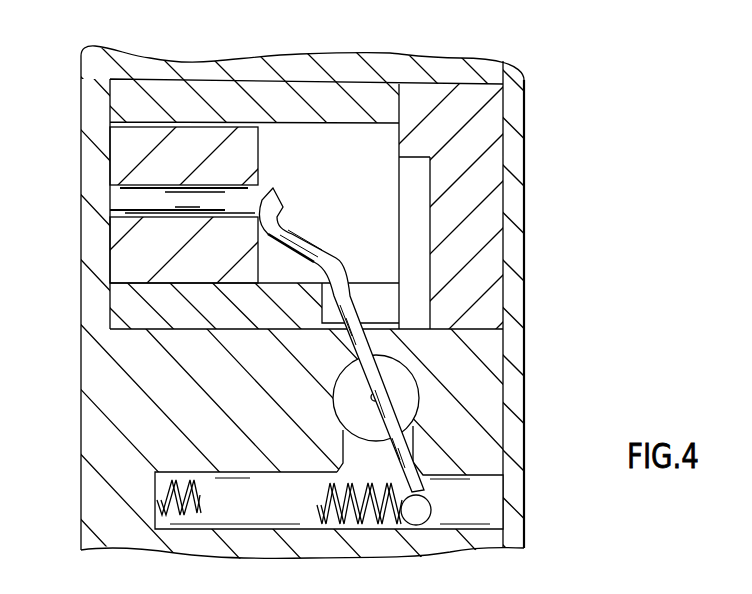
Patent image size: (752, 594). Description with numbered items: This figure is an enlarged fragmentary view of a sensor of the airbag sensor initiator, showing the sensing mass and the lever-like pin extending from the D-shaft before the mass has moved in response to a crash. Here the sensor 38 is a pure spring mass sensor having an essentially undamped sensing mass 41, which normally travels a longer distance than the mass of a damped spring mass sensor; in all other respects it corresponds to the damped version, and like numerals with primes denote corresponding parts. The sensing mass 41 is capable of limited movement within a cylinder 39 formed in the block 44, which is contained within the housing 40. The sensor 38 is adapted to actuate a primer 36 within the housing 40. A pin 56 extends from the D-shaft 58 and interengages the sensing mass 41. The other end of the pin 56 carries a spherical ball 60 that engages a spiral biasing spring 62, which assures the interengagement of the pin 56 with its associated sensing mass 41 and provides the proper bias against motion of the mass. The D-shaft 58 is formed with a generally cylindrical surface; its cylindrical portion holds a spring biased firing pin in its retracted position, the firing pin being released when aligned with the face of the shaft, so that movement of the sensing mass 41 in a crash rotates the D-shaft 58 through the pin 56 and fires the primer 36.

The sensor 38 is at (208, 97).
The cylinder 39 is at (272, 133).
The sensing mass 41 is at (314, 133).
The primer 36 is at (420, 320).
The pin 56 is at (353, 200).
The housing 40 is at (576, 296).
The block 44 is at (92, 423).
The D-shaft 58 is at (387, 410).
The spherical ball 60 is at (483, 495).
The spiral biasing spring 62 is at (318, 506).